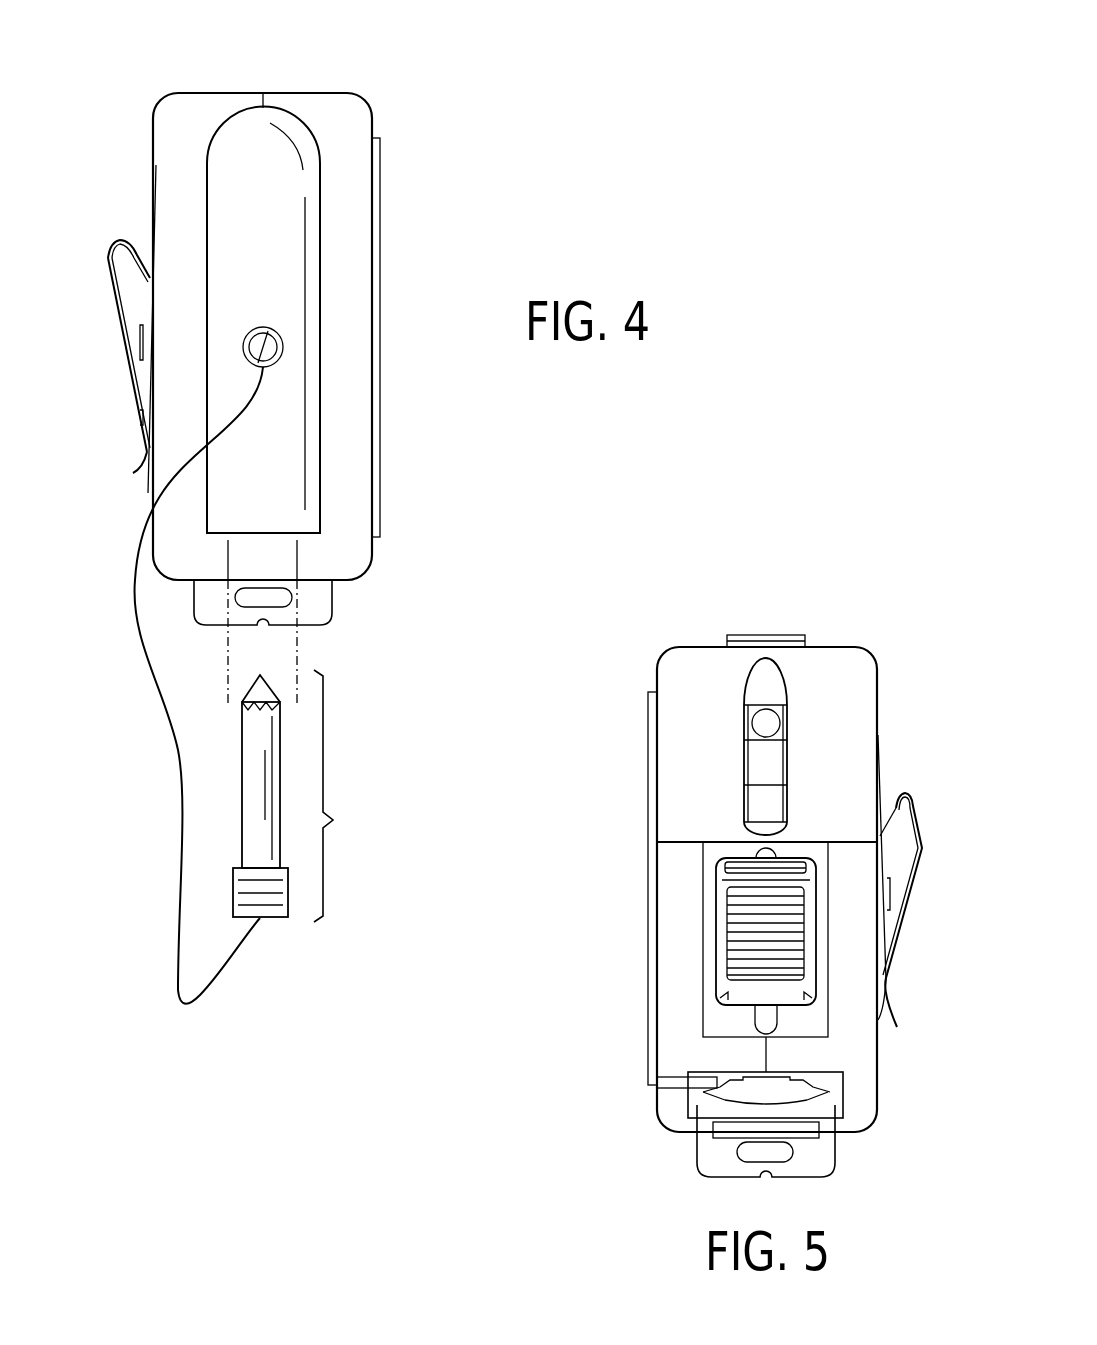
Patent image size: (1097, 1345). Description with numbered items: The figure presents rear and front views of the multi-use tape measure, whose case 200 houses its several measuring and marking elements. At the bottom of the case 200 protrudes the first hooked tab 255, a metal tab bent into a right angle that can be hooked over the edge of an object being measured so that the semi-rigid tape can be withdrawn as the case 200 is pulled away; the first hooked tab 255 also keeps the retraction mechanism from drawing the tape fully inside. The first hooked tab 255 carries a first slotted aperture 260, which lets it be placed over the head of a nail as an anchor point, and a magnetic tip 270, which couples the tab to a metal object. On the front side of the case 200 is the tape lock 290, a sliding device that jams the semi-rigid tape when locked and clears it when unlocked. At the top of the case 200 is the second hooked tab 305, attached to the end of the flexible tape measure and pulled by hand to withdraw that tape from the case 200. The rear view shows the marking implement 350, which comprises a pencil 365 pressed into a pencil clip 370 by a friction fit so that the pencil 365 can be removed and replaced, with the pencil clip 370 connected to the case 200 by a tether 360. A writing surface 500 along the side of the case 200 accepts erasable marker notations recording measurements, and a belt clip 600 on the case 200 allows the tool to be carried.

In FIG. 4, the case 200 is at (348, 94).
In FIG. 5, the case 200 is at (866, 647).
In FIG. 4, the first hooked tab 255 is at (332, 598).
In FIG. 5, the first hooked tab 255 is at (835, 1157).
In FIG. 4, the first slotted aperture 260 is at (285, 607).
In FIG. 5, the first slotted aperture 260 is at (743, 1155).
In FIG. 5, the magnetic tip 270 is at (715, 1128).
In FIG. 5, the tape lock 290 is at (733, 923).
In FIG. 5, the second hooked tab 305 is at (743, 635).
In FIG. 4, the marking implement 350 is at (360, 796).
In FIG. 4, the tether 360 is at (160, 678).
In FIG. 4, the pencil 365 is at (240, 742).
In FIG. 4, the pencil clip 370 is at (273, 917).
In FIG. 4, the writing surface 500 is at (380, 225).
In FIG. 5, the writing surface 500 is at (648, 818).
In FIG. 4, the belt clip 600 is at (120, 240).
In FIG. 5, the belt clip 600 is at (905, 798).